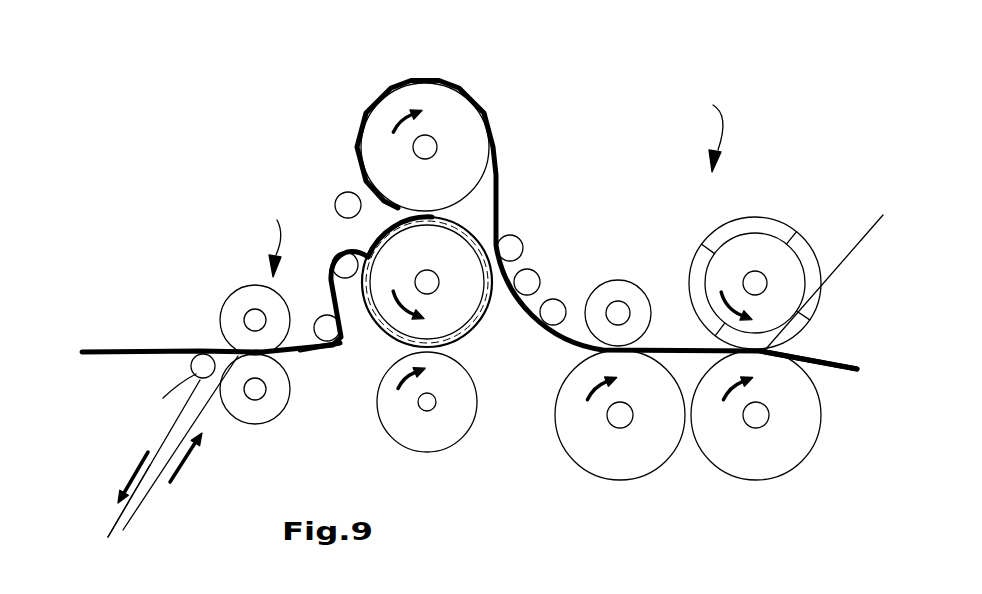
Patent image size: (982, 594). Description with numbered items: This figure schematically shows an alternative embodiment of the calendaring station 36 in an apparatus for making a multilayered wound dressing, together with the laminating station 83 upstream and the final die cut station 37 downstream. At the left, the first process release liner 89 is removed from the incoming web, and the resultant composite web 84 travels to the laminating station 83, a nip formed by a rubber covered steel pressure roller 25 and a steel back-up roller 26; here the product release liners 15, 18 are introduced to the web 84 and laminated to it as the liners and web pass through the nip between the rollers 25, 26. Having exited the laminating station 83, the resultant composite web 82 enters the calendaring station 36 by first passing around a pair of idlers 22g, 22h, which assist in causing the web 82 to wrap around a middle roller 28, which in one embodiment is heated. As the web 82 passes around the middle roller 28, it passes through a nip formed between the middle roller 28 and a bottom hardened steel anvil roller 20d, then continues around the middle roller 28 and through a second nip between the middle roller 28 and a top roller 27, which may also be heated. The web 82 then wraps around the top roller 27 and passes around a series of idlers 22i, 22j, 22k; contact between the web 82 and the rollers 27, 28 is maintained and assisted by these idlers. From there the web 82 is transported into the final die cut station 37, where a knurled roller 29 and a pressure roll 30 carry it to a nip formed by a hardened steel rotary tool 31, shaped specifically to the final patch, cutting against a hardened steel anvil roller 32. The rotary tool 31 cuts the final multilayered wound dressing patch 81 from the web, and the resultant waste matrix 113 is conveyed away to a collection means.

The calendaring station 36 is at (478, 83).
The final die cut station 37 is at (708, 114).
The top roller 27 is at (465, 135).
The middle roller 28 is at (463, 233).
The bottom hardened steel anvil roller 20d is at (435, 422).
The idler 22g is at (340, 330).
The idler 22h is at (333, 262).
The idler 22i is at (506, 252).
The idler 22j is at (525, 280).
The idler 22k is at (551, 310).
The laminating station 83 is at (268, 229).
The composite web 84 is at (137, 352).
The pressure roller 25 is at (243, 303).
The back-up roller 26 is at (273, 397).
The composite web 82 is at (317, 350).
The product release liner 15 is at (192, 446).
The product release liner 18 is at (203, 410).
The first process release liner 89 is at (118, 518).
The pressure roll 30 is at (630, 297).
The rotary tool 31 is at (758, 230).
The anvil roller 32 is at (782, 447).
The knurled roller 29 is at (625, 453).
The waste matrix 113 is at (868, 238).
The multilayered wound dressing patch 81 is at (827, 370).